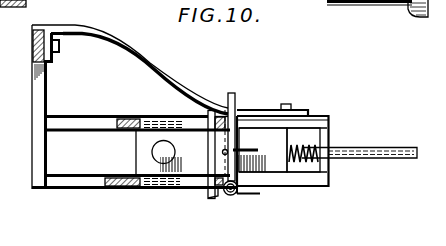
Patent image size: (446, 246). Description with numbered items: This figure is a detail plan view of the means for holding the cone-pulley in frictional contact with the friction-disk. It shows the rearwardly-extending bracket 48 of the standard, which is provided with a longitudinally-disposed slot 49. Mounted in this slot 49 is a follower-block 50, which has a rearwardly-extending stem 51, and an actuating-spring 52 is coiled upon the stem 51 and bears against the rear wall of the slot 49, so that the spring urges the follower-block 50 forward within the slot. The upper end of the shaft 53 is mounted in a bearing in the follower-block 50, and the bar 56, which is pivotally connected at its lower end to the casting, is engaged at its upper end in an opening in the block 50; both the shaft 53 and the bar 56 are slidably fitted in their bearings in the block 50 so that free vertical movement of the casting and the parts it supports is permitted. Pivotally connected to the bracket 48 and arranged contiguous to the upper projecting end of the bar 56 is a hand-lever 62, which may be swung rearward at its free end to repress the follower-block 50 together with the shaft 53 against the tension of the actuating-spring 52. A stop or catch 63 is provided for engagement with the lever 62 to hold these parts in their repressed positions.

The bracket 48 is at (136, 75).
The slot 49 is at (137, 153).
The follower-block 50 is at (182, 143).
The stem 51 is at (380, 144).
The actuating-spring 52 is at (305, 163).
The shaft 53 is at (157, 146).
The bar 56 is at (245, 151).
The hand-lever 62 is at (237, 99).
The stop or catch 63 is at (227, 107).